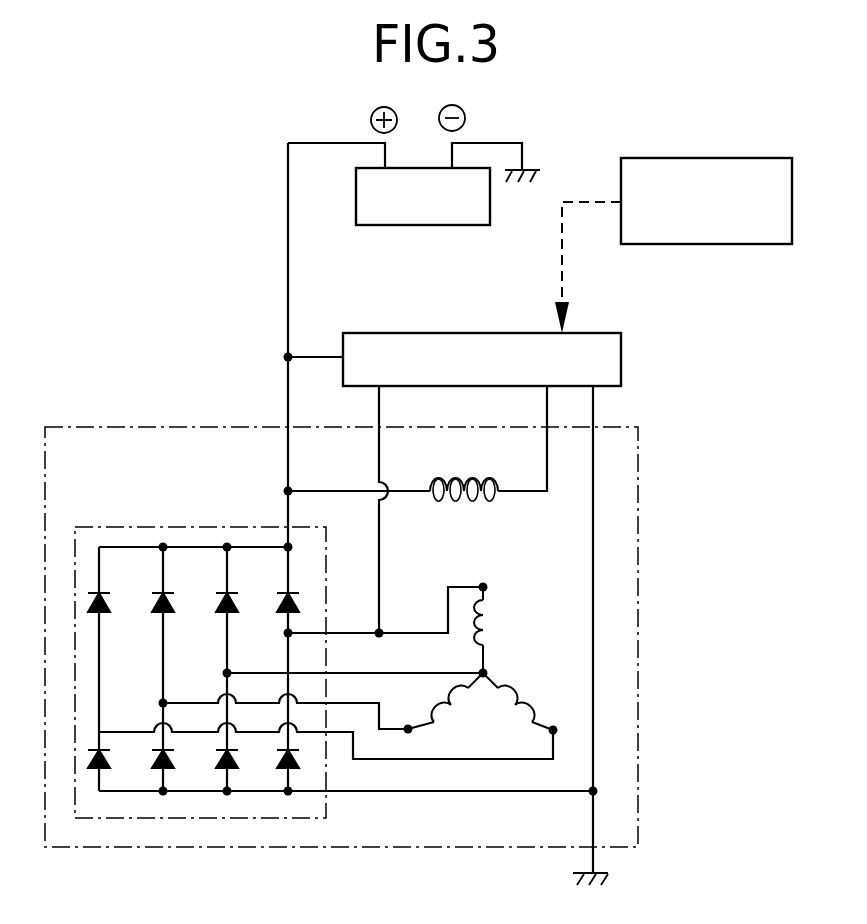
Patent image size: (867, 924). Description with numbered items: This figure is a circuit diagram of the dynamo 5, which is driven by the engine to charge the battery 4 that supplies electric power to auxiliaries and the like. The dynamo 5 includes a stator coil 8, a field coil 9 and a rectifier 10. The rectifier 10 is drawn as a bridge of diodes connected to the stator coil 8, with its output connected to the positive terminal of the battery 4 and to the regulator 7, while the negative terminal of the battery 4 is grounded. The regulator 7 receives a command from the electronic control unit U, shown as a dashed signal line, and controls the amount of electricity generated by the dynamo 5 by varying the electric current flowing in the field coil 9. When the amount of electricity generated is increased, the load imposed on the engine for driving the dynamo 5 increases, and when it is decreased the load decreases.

The battery 4 is at (413, 225).
The electronic control unit U is at (712, 158).
The regulator 7 is at (460, 333).
The dynamo 5 is at (638, 570).
The rectifier 10 is at (215, 525).
The field coil 9 is at (475, 500).
The stator coil 8 is at (503, 648).